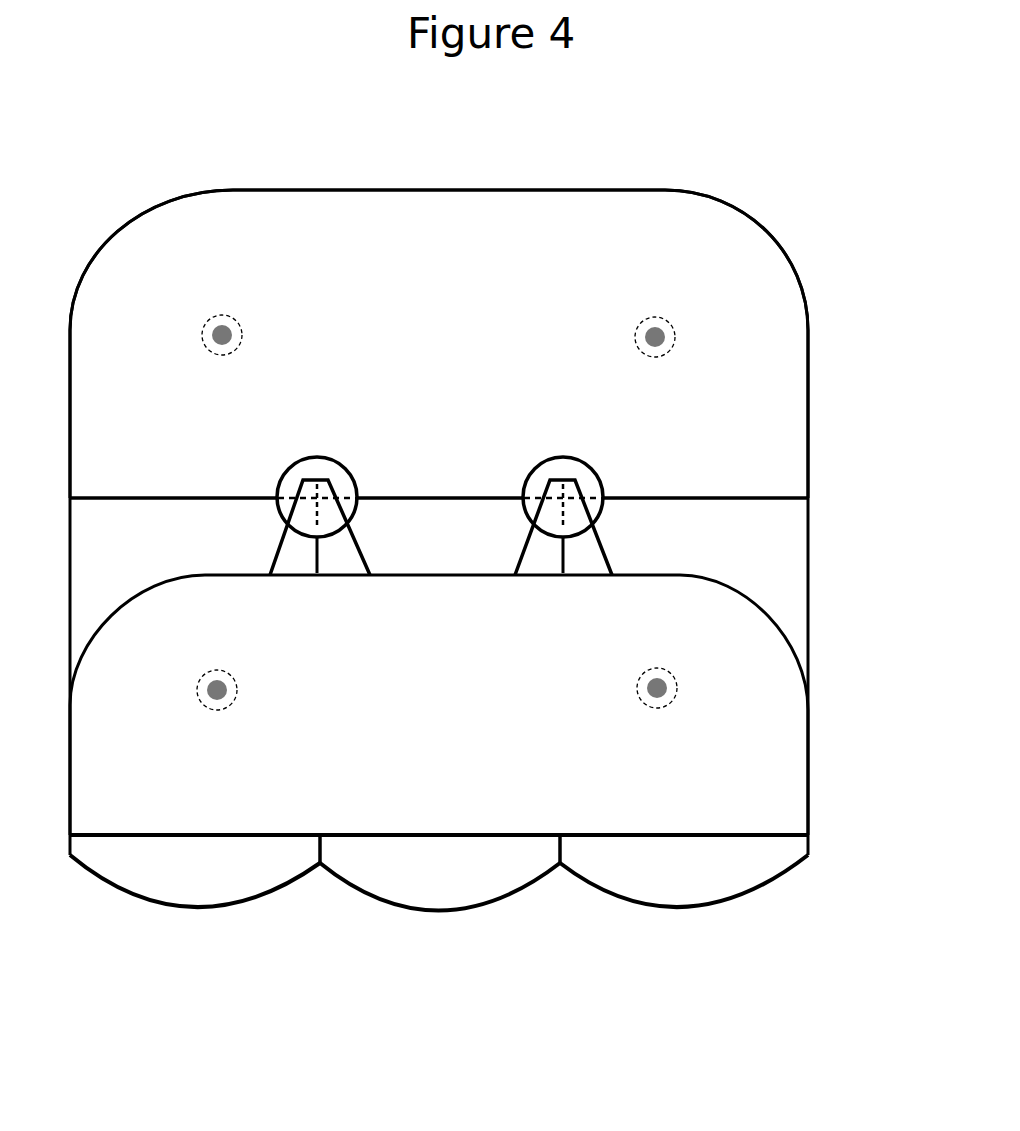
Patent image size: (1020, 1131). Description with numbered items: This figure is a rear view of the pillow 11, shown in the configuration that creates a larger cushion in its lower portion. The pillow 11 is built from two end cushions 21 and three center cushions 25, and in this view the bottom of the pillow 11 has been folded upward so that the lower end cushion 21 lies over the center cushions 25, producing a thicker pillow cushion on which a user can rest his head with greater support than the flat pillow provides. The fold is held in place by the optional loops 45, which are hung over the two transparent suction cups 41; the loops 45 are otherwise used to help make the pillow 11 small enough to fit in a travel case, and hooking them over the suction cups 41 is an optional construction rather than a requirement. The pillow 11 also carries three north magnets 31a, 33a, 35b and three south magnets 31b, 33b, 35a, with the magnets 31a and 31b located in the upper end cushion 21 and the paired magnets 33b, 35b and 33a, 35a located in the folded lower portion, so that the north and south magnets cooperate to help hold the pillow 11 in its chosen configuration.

The pillow 11 is at (439, 489).
The end cushion 21 is at (735, 260).
The center cushion 25 is at (745, 522).
The north magnet 31a is at (645, 335).
The south magnet 31b is at (230, 333).
The north magnet 33a is at (650, 698).
The south magnet 33b is at (225, 693).
The south magnet 35a is at (657, 688).
The north magnet 35b is at (217, 690).
The suction cup 41 is at (533, 460).
The loop 45 is at (520, 490).